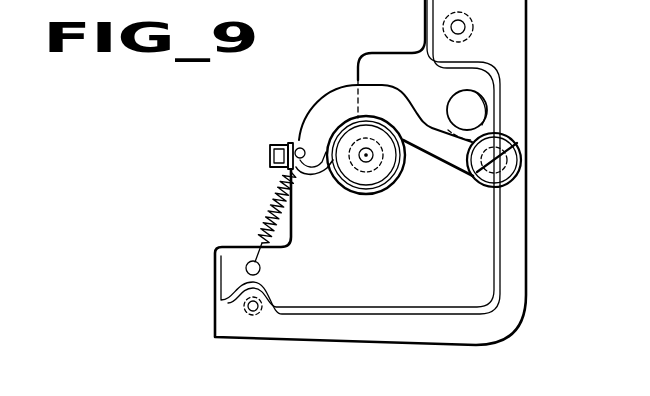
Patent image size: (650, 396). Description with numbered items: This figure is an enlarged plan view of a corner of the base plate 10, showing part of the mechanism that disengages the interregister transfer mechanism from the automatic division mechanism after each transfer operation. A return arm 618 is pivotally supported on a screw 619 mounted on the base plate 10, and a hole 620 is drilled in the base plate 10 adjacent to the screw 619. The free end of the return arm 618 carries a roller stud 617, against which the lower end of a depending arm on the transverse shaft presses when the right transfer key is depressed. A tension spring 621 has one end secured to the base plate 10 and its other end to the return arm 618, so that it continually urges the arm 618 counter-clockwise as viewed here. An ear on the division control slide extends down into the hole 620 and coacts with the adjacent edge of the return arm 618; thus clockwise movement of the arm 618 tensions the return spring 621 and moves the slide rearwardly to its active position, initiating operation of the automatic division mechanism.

The base plate 10 is at (517, 240).
The roller stud 617 is at (270, 160).
The return arm 618 is at (375, 90).
The screw 619 is at (521, 163).
The hole 620 is at (489, 114).
The tension spring 621 is at (282, 225).